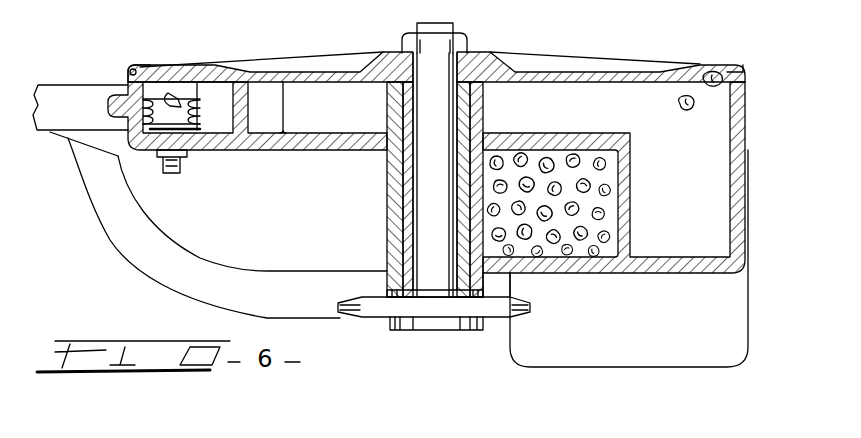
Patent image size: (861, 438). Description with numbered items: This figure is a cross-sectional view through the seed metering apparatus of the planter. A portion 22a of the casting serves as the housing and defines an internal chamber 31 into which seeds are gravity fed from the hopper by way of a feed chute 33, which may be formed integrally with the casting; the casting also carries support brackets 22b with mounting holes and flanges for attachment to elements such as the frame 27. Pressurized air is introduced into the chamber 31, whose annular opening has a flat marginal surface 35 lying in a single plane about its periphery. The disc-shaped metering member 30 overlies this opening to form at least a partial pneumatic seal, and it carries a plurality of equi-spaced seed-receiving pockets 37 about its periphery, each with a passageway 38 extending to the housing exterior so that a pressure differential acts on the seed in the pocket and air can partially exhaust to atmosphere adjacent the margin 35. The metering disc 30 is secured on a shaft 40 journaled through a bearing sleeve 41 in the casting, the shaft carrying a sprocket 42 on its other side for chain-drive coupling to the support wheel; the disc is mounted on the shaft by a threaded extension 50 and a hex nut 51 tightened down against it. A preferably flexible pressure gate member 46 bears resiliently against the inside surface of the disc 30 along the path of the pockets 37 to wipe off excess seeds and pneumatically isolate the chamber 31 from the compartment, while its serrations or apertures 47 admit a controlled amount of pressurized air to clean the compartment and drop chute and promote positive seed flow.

The portion of casting 22a is at (745, 125).
The support brackets 22b is at (263, 290).
The frame 27 is at (153, 78).
The metering member 30 is at (207, 73).
The internal chamber 31 is at (672, 162).
The feed chute 33 is at (603, 212).
The flat marginal surface 35 is at (748, 78).
The seed-receiving pockets 37 is at (730, 67).
The passageway 38 is at (130, 70).
The shaft 40 is at (432, 267).
The bearing sleeve 41 is at (462, 282).
The sprocket 42 is at (420, 308).
The pressure gate member 46 is at (173, 118).
The serrations or apertures 47 is at (115, 100).
The threaded extension 50 is at (453, 25).
The hex nut 51 is at (418, 43).